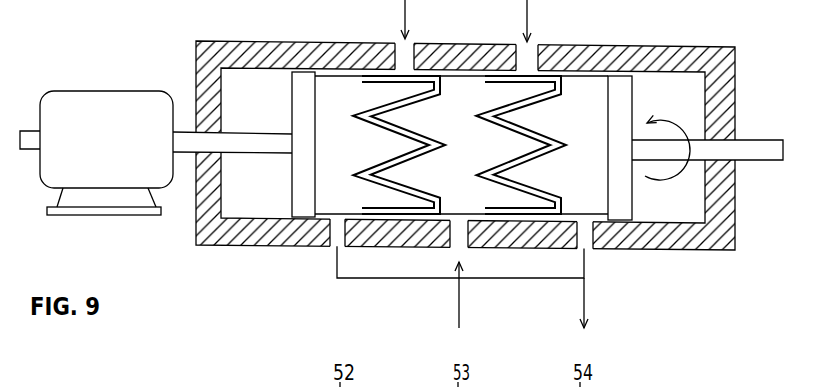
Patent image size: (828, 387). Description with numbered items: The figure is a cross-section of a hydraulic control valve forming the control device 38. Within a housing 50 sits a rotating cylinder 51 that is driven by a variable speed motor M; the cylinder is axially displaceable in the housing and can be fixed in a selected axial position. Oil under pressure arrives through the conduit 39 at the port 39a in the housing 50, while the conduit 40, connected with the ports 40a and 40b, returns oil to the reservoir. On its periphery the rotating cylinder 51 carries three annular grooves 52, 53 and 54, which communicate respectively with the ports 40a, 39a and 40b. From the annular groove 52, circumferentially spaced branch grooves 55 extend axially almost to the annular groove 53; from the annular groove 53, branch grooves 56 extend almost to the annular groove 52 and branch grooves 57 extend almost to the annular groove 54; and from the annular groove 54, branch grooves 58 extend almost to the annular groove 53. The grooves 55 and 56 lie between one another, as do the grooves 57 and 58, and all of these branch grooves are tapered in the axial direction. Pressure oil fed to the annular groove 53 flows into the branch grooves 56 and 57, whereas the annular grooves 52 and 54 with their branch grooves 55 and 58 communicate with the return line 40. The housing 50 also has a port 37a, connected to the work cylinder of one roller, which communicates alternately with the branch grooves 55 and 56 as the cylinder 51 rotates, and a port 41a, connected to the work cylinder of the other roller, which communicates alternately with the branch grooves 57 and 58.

The control device 38 is at (215, 39).
The housing 50 is at (452, 146).
The rotating cylinder 51 is at (302, 197).
The annular groove 52 is at (336, 124).
The annular groove 53 is at (465, 125).
The annular groove 54 is at (579, 127).
The branch grooves 55 is at (385, 145).
The branch grooves 56 is at (389, 105).
The branch grooves 57 is at (502, 148).
The branch grooves 58 is at (543, 105).
The port 37a is at (404, 60).
The port 41a is at (527, 62).
The port 40a is at (338, 236).
The port 39a is at (458, 237).
The port 40b is at (585, 239).
The conduit 39 is at (474, 295).
The conduit 40 is at (462, 287).
The variable speed motor M is at (93, 90).